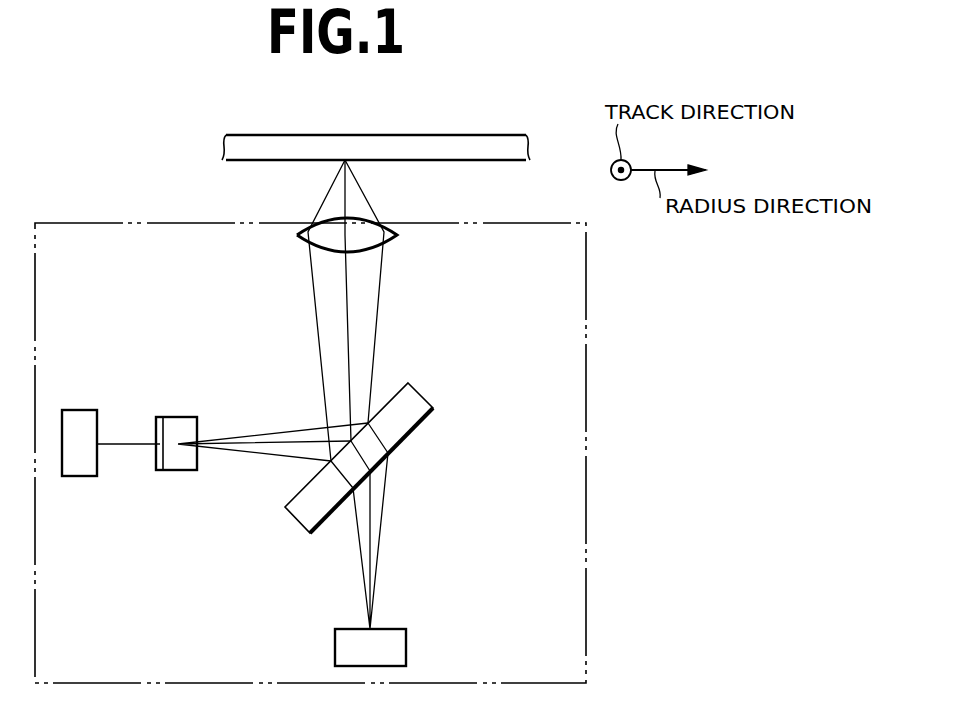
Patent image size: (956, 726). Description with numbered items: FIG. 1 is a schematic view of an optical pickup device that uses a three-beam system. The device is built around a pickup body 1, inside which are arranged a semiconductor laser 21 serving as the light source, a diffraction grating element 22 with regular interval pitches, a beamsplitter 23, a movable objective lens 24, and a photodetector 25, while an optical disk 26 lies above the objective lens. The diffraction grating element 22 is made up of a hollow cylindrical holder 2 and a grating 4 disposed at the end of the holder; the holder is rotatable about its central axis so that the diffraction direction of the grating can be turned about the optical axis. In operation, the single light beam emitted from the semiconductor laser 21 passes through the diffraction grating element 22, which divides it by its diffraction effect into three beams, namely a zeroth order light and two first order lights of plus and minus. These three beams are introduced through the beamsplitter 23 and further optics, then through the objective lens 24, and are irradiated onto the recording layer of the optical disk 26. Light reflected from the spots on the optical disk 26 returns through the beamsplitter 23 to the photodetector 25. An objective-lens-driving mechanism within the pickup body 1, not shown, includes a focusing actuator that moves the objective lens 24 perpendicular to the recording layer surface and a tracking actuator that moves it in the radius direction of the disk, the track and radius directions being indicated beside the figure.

The pickup body 1 is at (586, 266).
The hollow cylindrical holder 2 is at (178, 471).
The grating 4 is at (157, 417).
The semiconductor laser 21 is at (84, 410).
The diffraction grating element 22 is at (176, 419).
The beamsplitter 23 is at (436, 421).
The movable objective lens 24 is at (397, 236).
The photodetector 25 is at (406, 652).
The optical disk 26 is at (497, 135).